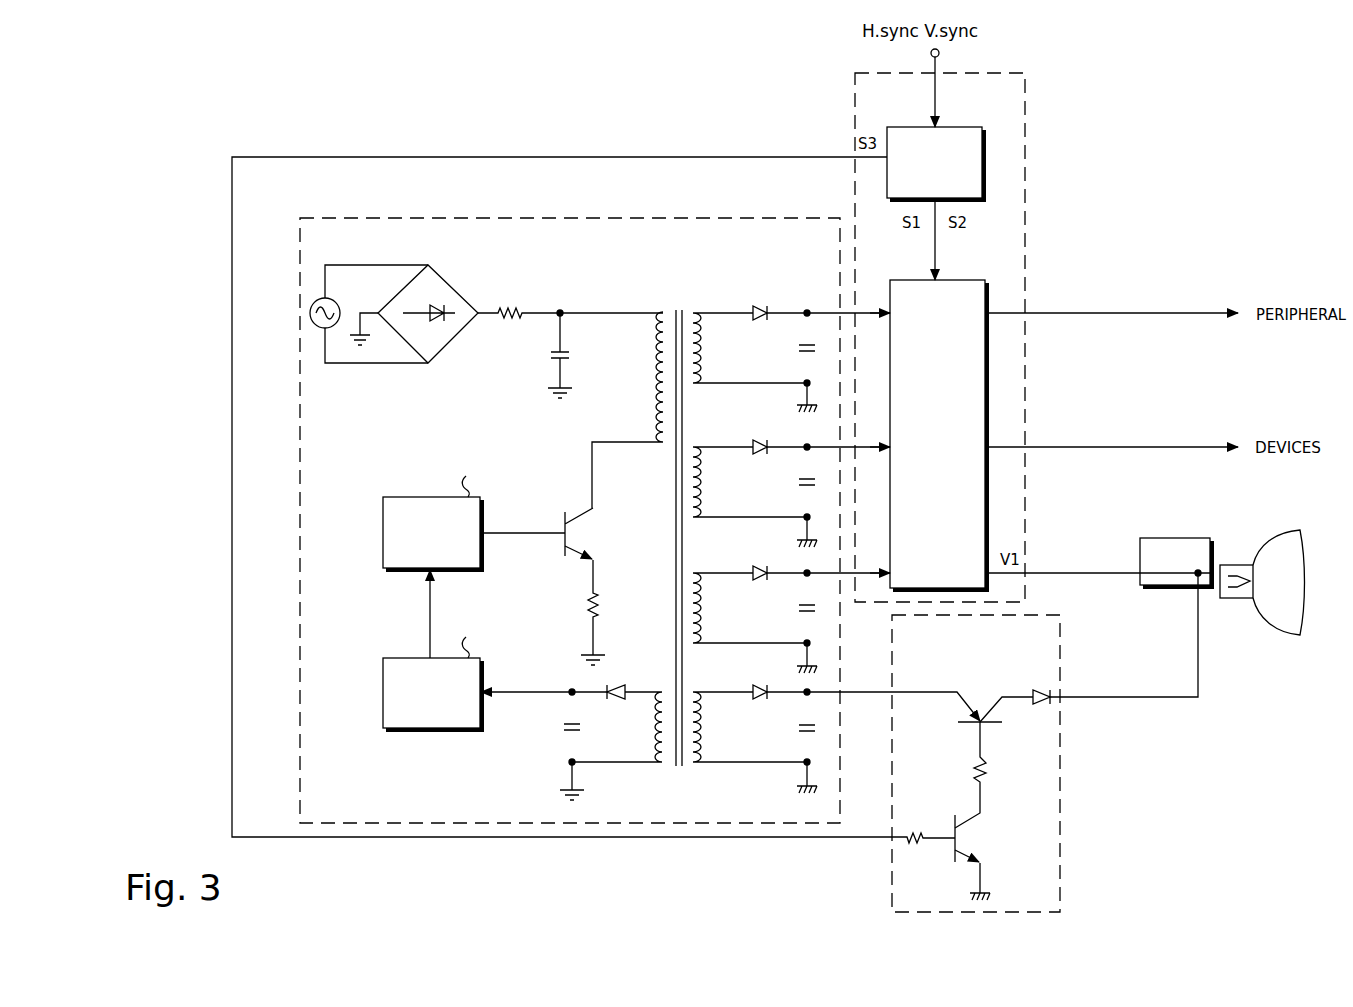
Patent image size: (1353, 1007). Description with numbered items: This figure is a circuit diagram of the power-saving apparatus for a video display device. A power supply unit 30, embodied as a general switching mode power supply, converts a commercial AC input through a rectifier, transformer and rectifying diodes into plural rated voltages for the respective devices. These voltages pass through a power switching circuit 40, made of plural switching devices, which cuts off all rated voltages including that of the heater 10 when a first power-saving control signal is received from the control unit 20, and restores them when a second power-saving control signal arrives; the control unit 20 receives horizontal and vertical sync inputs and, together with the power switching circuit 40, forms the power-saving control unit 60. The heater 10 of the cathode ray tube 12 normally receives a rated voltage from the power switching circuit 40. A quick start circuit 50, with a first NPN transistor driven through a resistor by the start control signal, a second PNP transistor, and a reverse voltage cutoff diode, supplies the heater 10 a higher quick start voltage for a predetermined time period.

The heater 10 is at (1163, 538).
The cathode ray tube 12 is at (1288, 532).
The control unit 20 is at (968, 127).
The power supply unit 30 is at (394, 218).
The power switching circuit 40 is at (968, 275).
The quick start circuit 50 is at (1060, 648).
The power-saving control unit 60 is at (1025, 103).